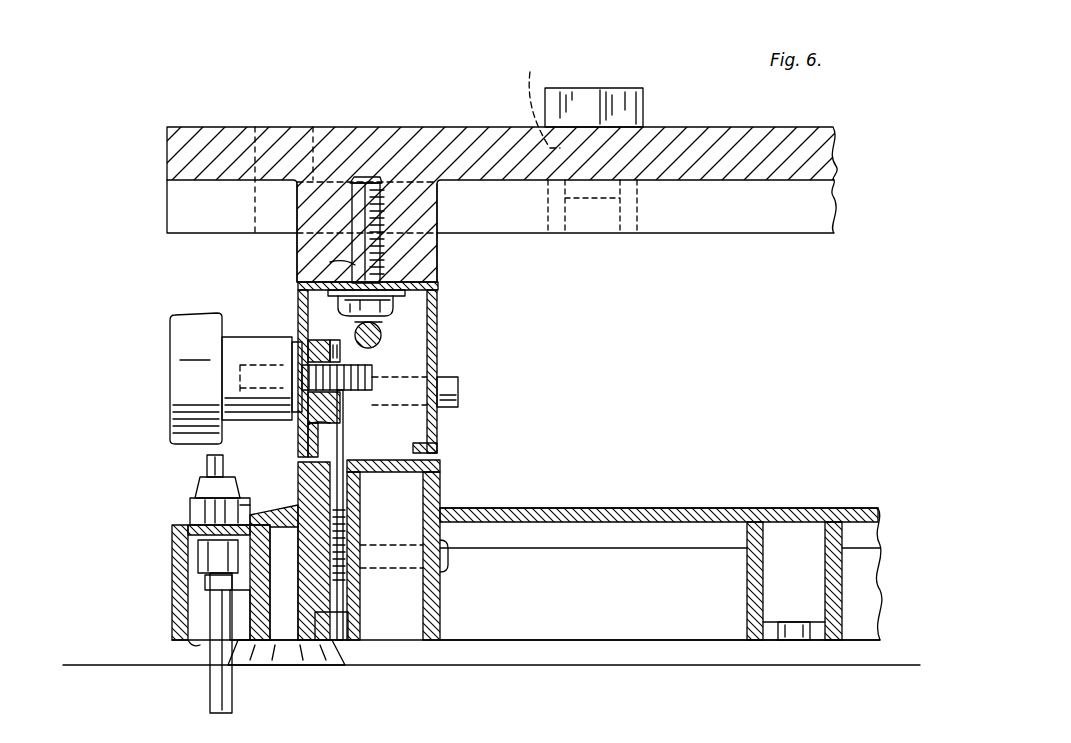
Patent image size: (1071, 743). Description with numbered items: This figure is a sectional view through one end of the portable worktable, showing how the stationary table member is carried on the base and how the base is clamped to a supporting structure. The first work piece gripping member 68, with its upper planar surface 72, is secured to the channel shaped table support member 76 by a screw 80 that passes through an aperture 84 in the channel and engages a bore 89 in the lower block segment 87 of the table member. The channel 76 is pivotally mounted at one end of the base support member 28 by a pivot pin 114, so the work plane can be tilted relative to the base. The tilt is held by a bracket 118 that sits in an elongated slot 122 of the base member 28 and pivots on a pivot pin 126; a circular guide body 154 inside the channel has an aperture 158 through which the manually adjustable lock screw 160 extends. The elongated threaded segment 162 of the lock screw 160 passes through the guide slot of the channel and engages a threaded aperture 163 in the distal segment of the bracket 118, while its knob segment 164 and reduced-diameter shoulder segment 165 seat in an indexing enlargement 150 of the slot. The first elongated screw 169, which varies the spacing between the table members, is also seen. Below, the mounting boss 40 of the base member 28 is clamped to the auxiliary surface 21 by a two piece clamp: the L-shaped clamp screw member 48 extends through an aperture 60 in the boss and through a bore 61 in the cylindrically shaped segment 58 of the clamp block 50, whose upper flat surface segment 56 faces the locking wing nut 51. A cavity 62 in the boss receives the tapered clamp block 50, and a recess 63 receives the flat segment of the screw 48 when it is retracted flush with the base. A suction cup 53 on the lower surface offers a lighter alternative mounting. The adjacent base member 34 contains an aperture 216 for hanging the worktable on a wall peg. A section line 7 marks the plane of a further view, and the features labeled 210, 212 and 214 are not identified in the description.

The section line 7- 7 is at (305, 118).
The auxiliary surface 21 is at (82, 662).
The base support member 28 is at (298, 480).
The base member 34 is at (683, 508).
The mounting boss 40 is at (190, 563).
The clamp screw member 48 is at (215, 685).
The clamp block 50 is at (225, 545).
The locking nut 51 is at (215, 478).
The suction cup 53 is at (285, 655).
The upper flat surface segment 56 is at (210, 510).
The cylindrically shaped segment 58 is at (250, 505).
The aperture 60 is at (215, 603).
The bore 61 is at (190, 508).
The cavity 62 is at (215, 585).
The recess 63 is at (195, 645).
The work piece gripping member 68 is at (463, 127).
The upper planar surface 72 is at (723, 128).
The table support member 76 is at (440, 315).
The screw 80 is at (385, 262).
The aperture 84 is at (330, 262).
The lower block segment 87 is at (440, 250).
The bore 89 is at (385, 215).
The pivot pin 114 is at (462, 387).
The bracket 118 is at (342, 435).
The elongated slot 122 is at (350, 499).
The pivot pin 126 is at (448, 555).
The indexing enlargement 150 is at (310, 428).
The circular guide body 154 is at (330, 305).
The aperture 158 is at (386, 340).
The lock screw 160 is at (160, 362).
The threaded segment 162 is at (373, 395).
The threaded aperture 163 is at (435, 358).
The knob segment 164 is at (170, 390).
The shoulder segment 165 is at (300, 345).
The elongated screw 169 is at (382, 327).
The opening 210 is at (539, 96).
The block 212 is at (615, 88).
The recess 214 is at (605, 200).
The aperture 216 is at (790, 622).